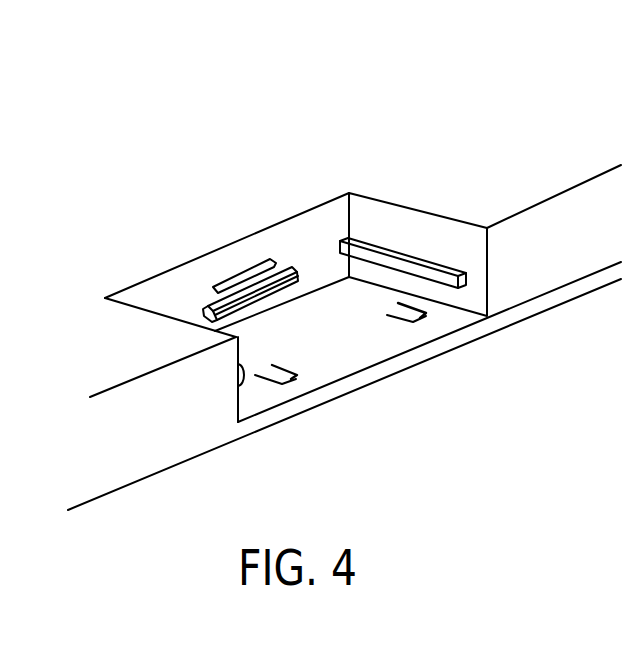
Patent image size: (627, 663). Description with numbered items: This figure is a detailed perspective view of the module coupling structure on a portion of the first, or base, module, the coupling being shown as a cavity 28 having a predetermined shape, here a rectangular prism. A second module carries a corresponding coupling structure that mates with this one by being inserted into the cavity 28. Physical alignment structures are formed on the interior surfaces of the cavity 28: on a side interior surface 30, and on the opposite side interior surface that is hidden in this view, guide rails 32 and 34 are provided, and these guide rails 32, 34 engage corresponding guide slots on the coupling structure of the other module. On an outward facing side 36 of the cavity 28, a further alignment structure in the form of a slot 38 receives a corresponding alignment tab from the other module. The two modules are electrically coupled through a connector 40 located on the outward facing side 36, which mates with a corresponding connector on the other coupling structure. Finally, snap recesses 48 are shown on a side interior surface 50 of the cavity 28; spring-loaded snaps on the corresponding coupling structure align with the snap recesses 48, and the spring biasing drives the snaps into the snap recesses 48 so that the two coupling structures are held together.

The cavity 28 is at (293, 212).
The side interior surface 30 is at (395, 212).
The guide rail 32 is at (433, 258).
The guide rail 34 is at (243, 380).
The outward facing side 36 is at (253, 242).
The slot 38 is at (230, 279).
The connector 40 is at (207, 306).
The snap recesses 48 is at (297, 376).
The side interior surface 50 is at (337, 307).